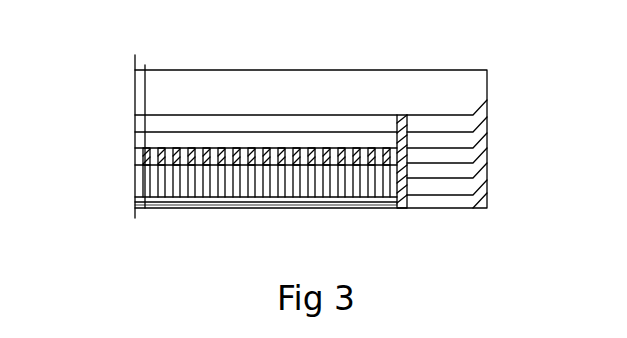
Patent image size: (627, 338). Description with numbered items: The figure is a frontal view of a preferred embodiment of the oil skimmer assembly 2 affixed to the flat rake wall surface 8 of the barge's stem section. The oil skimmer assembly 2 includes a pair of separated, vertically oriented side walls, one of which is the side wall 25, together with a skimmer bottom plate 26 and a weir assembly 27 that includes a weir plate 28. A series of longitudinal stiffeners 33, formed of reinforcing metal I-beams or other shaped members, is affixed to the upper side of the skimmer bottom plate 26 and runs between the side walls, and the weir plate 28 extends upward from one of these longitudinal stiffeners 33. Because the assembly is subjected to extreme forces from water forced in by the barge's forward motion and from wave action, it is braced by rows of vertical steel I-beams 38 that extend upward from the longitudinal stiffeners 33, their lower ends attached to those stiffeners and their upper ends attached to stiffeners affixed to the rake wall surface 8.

The oil skimmer assembly 2 is at (373, 70).
The rake wall surface 8 is at (472, 162).
The side wall 25 is at (407, 186).
The skimmer bottom plate 26 is at (218, 204).
The weir assembly 27 is at (170, 181).
The weir plate 28 is at (303, 178).
The longitudinal stiffeners 33 is at (213, 200).
The vertical steel I-beams 38 is at (380, 186).